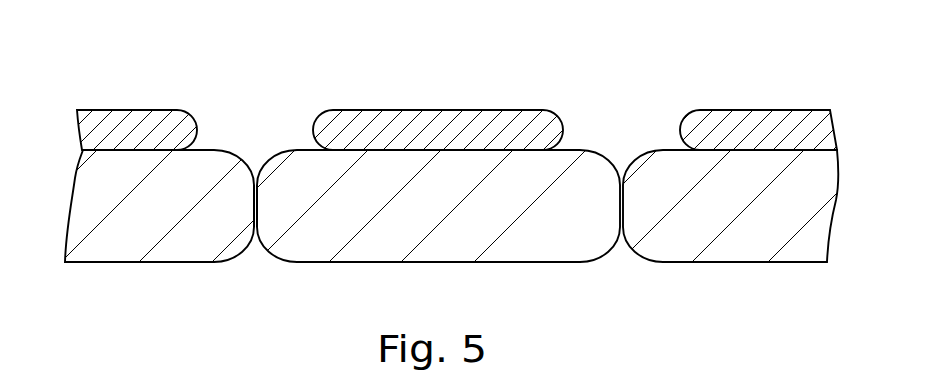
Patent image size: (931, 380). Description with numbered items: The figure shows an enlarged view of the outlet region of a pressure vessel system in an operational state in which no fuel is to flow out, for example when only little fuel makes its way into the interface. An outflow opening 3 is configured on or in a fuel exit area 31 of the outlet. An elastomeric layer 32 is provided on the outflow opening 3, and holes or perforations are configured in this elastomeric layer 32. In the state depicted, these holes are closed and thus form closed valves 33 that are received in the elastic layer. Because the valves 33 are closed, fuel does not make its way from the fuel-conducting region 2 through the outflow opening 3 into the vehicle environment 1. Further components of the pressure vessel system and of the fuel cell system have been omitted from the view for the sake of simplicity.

The vehicle environment 1 is at (430, 90).
The fuel-conducting region 2 is at (429, 307).
The outflow opening 3 is at (713, 185).
The fuel exit area 31 is at (748, 102).
The elastomeric layer 32 is at (748, 270).
The valve 33 is at (266, 213).